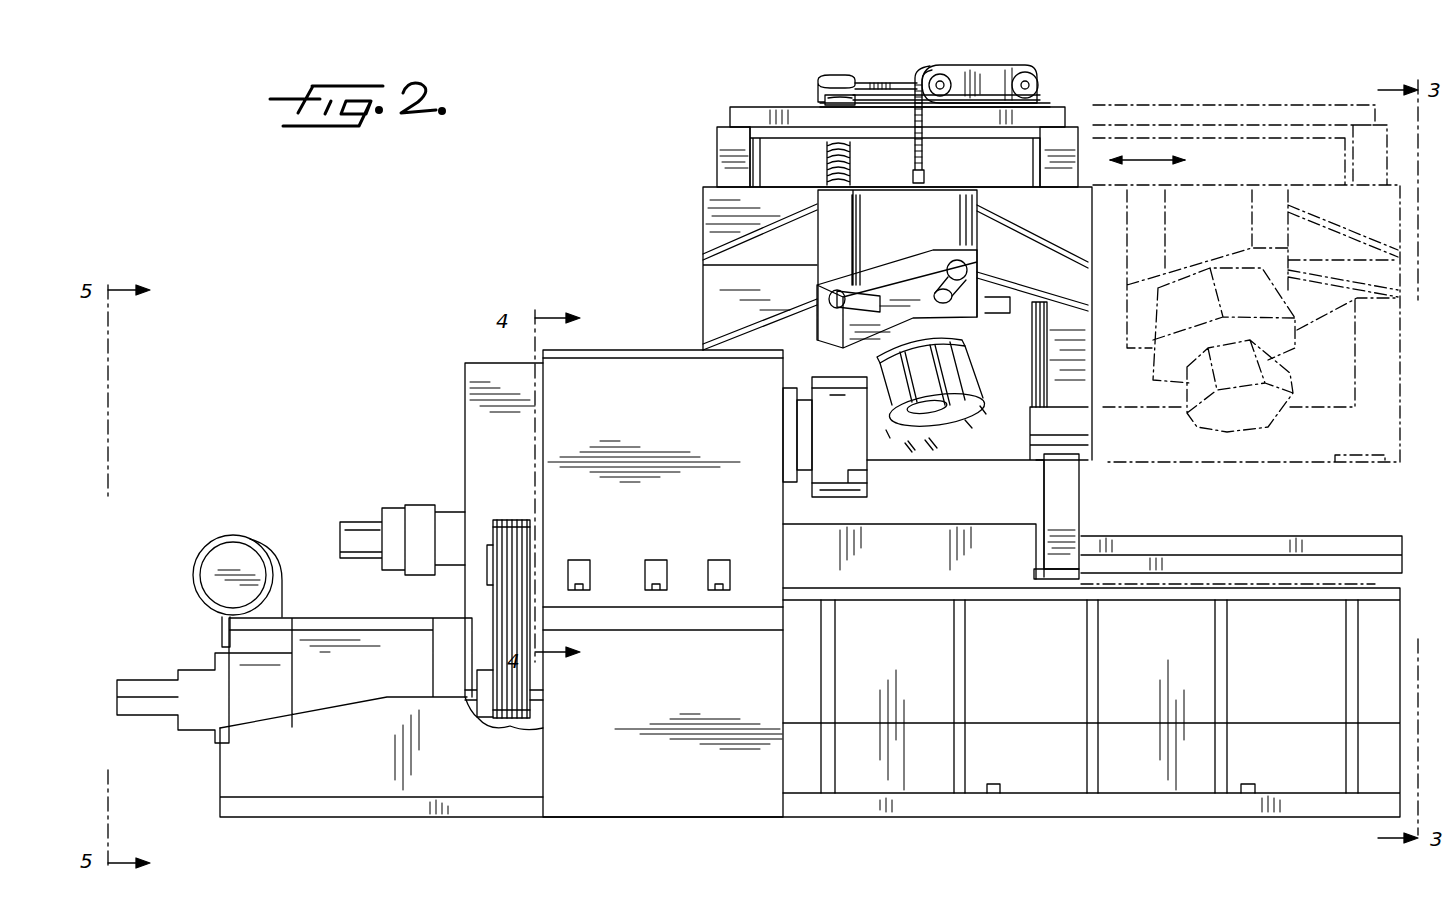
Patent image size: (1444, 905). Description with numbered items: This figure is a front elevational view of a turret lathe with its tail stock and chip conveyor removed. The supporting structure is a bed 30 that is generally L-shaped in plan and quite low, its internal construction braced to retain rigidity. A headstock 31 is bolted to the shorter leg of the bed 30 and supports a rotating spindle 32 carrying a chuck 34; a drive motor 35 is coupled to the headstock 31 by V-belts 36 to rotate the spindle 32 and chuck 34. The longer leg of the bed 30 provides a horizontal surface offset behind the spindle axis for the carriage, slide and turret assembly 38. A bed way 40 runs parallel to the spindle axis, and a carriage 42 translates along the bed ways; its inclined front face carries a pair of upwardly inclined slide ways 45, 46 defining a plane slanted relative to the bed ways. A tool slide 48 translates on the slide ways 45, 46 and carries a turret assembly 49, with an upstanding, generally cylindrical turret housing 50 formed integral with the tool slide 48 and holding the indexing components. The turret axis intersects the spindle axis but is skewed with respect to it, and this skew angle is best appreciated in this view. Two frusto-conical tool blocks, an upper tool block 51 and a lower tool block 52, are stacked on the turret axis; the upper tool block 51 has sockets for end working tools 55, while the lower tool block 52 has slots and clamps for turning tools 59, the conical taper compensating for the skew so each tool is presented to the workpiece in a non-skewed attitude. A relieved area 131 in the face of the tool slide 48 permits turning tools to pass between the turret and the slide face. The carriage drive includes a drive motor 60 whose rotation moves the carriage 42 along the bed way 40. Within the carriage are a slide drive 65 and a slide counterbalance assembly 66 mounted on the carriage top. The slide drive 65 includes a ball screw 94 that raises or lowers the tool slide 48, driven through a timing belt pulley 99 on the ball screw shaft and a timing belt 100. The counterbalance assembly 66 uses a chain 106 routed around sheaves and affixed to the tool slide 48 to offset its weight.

The bed 30 is at (618, 812).
The headstock 31 is at (641, 375).
The spindle 32 is at (800, 458).
The chuck 34 is at (820, 418).
The drive motor 35 is at (348, 634).
The V-belts 36 is at (515, 520).
The carriage, slide and turret assembly 38 is at (1283, 172).
The bed way 40 is at (1160, 540).
The carriage 42 is at (996, 172).
The slide way 45 is at (724, 135).
The slide way 46 is at (1067, 130).
The tool slide 48 is at (707, 207).
The turret assembly 49 is at (826, 320).
The turret housing 50 is at (840, 210).
The upper tool block 51 is at (985, 330).
The lower tool block 52 is at (967, 380).
The end working tools 55 is at (937, 282).
The turning tools 59 is at (930, 450).
The drive motor 60 is at (417, 503).
The slide drive 65 is at (845, 72).
The slide counterbalance assembly 66 is at (985, 62).
The ball screw 94 is at (850, 167).
The timing belt pulley 99 is at (825, 76).
The timing belt 100 is at (885, 82).
The chain 106 is at (922, 76).
The relieved area 131 is at (1010, 400).